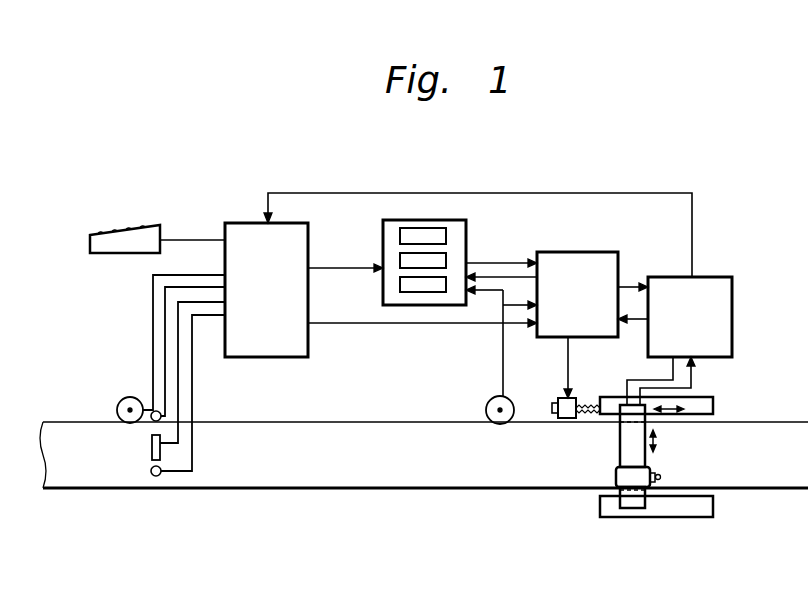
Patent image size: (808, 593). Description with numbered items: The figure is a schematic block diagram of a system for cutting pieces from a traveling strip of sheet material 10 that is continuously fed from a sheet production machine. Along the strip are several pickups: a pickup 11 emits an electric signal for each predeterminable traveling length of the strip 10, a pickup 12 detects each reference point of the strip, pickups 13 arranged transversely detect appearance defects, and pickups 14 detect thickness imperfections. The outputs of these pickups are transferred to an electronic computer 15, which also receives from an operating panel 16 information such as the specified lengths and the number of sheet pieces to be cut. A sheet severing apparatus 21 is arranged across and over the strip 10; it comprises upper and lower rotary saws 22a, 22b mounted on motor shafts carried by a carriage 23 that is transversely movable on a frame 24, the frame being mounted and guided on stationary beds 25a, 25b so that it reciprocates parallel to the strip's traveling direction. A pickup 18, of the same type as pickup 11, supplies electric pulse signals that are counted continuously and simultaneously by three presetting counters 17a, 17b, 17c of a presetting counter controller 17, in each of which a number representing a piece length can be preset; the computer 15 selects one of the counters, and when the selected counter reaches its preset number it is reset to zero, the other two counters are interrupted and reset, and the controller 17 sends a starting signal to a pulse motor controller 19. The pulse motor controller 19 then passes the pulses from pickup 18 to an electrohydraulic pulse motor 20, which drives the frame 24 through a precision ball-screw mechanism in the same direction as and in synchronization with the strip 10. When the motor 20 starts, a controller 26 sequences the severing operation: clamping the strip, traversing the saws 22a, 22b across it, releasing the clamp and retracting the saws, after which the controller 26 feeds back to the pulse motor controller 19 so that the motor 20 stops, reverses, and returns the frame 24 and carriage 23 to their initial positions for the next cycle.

The traveling strip of sheet material 10 is at (57, 432).
The pickup 11 is at (137, 397).
The pickup 12 is at (150, 421).
The pickups 13 is at (152, 452).
The pickups 14 is at (156, 478).
The electronic computer 15 is at (268, 358).
The operating panel 16 is at (118, 250).
The presetting counter controller 17 is at (466, 237).
The presetting counter 17a is at (400, 236).
The presetting counter 17b is at (400, 260).
The presetting counter 17c is at (422, 293).
The pickup 18 is at (487, 401).
The pulse motor controller 19 is at (592, 258).
The electrohydraulic pulse motor 20 is at (565, 418).
The sheet severing apparatus 21 is at (628, 526).
The upper rotary saw 22a is at (655, 472).
The lower rotary saw 22b is at (715, 464).
The carriage 23 is at (615, 478).
The frame 24 is at (624, 432).
The stationary bed 25a is at (710, 404).
The stationary bed 25b is at (697, 520).
The controller 26 is at (726, 304).